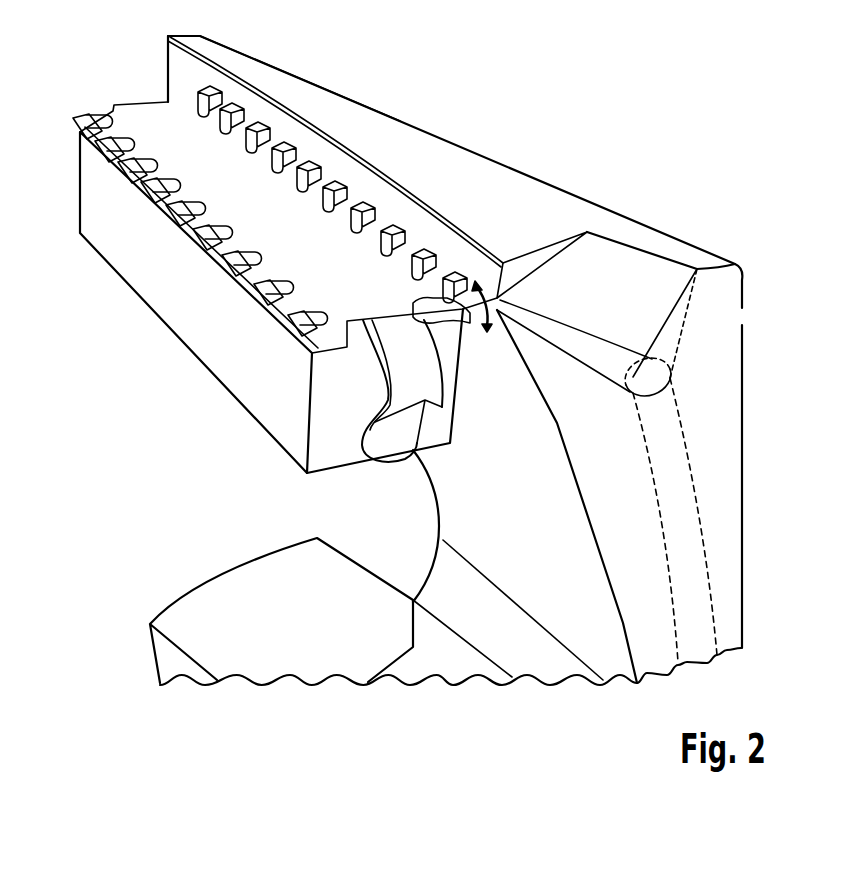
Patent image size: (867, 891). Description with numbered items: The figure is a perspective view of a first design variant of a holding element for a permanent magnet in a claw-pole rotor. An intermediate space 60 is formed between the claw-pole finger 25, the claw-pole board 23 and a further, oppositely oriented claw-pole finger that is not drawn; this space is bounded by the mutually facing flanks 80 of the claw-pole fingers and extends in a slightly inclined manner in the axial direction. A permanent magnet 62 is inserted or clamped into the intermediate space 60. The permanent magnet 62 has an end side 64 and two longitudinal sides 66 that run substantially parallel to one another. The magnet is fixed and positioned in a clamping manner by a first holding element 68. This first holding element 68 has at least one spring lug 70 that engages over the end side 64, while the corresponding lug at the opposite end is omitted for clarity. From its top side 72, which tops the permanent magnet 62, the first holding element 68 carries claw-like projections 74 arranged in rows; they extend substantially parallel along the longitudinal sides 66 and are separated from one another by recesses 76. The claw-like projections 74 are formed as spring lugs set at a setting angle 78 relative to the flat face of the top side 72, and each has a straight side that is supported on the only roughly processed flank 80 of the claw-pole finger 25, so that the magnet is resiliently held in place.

The claw-pole board 23 is at (652, 515).
The claw-pole finger 25 is at (355, 132).
The intermediate space 60 is at (122, 78).
The permanent magnet 62 is at (283, 402).
The end side 64 is at (328, 448).
The longitudinal sides 66 is at (163, 298).
The first holding element 68 is at (342, 95).
The spring lug 70 is at (413, 383).
The top side 72 is at (387, 293).
The claw-like projections 74 is at (387, 243).
The recesses 76 is at (237, 165).
The setting angle 78 is at (500, 299).
The flanks 80 is at (183, 62).